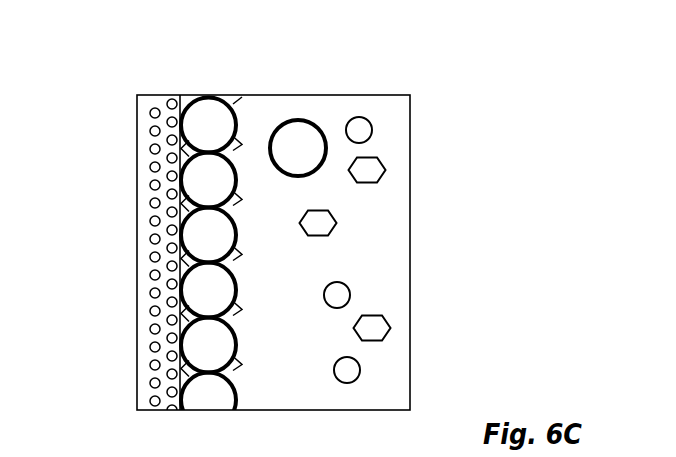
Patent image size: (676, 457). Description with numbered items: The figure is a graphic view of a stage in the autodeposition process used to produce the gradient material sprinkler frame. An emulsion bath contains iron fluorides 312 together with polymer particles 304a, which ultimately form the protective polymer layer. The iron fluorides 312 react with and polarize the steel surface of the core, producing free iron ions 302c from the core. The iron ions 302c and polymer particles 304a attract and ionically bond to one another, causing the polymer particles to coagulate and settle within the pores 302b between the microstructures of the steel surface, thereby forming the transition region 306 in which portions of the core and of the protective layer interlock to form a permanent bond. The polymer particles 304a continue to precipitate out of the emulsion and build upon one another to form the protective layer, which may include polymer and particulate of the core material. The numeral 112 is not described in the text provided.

The transition region 306 is at (181, 84).
The pores 302b is at (178, 253).
The iron ions 302c is at (210, 112).
The polymer particles 304a is at (155, 148).
The iron fluorides 312 is at (364, 128).
The circular pore 112 is at (342, 292).